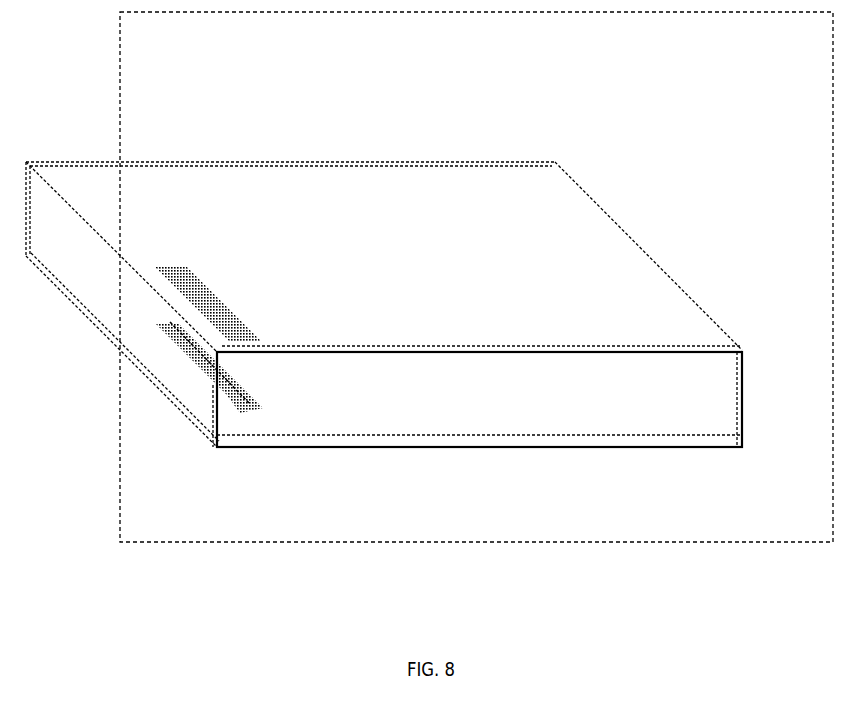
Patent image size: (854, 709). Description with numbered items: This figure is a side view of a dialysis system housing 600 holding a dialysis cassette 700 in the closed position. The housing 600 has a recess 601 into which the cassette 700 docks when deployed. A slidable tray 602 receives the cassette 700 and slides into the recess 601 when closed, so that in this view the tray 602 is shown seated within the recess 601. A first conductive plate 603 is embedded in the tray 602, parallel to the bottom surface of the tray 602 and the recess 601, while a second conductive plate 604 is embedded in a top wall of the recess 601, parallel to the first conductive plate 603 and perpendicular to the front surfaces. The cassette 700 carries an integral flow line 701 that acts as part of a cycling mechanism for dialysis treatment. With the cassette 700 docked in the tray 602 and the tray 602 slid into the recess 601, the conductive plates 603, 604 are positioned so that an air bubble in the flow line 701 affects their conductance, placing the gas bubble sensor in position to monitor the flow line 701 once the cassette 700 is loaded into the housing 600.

The housing 600 is at (163, 534).
The recess 601 is at (636, 268).
The slidable tray 602 is at (742, 447).
The first conductive plate 603 is at (222, 368).
The second conductive plate 604 is at (197, 287).
The cassette 700 is at (424, 342).
The flow line 701 is at (240, 395).